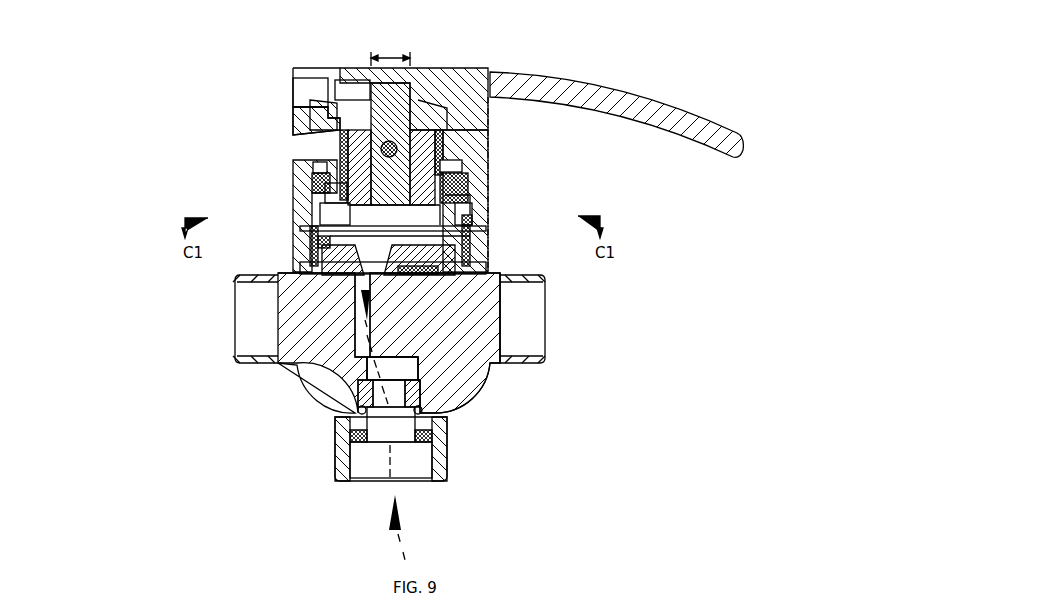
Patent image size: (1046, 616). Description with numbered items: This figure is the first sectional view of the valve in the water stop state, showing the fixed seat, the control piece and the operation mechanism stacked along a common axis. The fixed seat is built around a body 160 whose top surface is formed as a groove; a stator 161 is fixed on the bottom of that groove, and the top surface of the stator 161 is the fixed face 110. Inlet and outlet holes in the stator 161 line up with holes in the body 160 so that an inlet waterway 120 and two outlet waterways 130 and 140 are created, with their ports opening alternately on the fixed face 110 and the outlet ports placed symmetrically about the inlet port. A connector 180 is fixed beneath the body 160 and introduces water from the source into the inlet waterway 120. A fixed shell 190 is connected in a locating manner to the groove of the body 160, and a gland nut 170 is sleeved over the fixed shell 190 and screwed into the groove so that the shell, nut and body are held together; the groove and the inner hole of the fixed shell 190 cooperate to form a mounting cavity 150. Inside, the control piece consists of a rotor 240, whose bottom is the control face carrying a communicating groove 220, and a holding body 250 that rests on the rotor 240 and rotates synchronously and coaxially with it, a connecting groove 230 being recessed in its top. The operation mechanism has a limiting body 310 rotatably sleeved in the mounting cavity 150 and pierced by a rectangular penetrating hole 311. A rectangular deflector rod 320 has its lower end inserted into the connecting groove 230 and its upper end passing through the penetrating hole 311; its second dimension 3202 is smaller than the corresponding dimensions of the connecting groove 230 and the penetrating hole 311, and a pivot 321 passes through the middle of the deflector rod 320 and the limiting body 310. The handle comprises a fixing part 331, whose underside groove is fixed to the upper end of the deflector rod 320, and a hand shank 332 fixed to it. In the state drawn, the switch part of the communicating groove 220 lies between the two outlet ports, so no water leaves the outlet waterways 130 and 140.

The fixed face 110 is at (480, 248).
The inlet waterway 120 is at (372, 365).
The outlet waterway 130 is at (258, 318).
The outlet waterway 140 is at (522, 322).
The mounting cavity 150 is at (328, 202).
The body 160 is at (437, 328).
The stator 161 is at (485, 273).
The gland nut 170 is at (296, 178).
The connector 180 is at (440, 440).
The fixed shell 190 is at (370, 160).
The communicating groove 220 is at (330, 262).
The connecting groove 230 is at (465, 210).
The rotor 240 is at (330, 237).
The holding body 250 is at (333, 212).
The limiting body 310 is at (440, 157).
The penetrating hole 311 is at (368, 168).
The deflector rod 320 is at (370, 82).
The pivot 321 is at (345, 150).
The fixing part 331 is at (457, 83).
The hand shank 332 is at (652, 108).
The second dimension 3202 is at (390, 57).